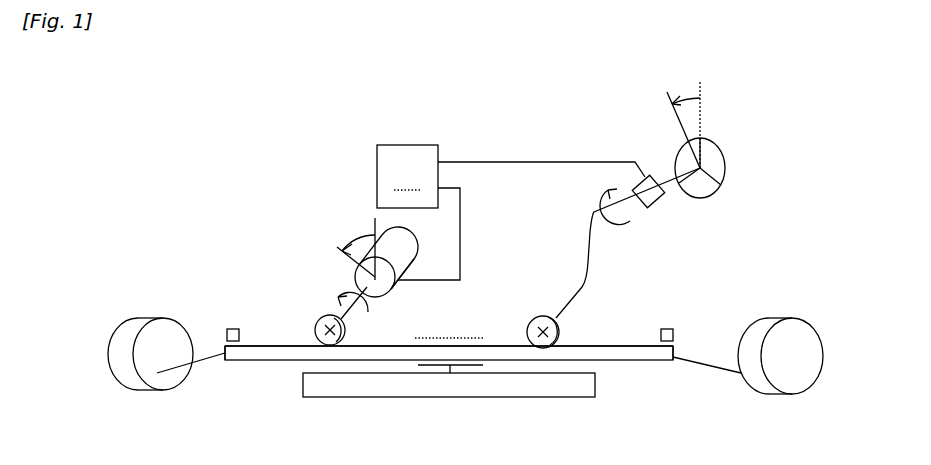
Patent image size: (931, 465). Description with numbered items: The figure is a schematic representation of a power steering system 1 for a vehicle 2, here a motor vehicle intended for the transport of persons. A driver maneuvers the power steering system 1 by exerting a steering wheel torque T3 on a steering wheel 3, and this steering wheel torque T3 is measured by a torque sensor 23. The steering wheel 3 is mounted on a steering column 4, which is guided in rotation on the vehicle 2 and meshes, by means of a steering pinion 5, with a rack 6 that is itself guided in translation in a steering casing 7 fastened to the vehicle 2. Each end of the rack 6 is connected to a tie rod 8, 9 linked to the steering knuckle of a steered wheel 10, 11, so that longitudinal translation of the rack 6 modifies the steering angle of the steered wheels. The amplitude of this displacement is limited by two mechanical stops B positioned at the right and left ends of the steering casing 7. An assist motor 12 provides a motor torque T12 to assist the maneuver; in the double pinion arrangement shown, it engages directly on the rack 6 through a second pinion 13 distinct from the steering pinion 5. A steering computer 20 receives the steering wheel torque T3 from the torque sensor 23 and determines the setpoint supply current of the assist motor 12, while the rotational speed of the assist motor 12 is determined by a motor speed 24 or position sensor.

The power steering system 1 is at (772, 213).
The vehicle 2 is at (590, 386).
The steering wheel 3 is at (725, 160).
The steering column 4 is at (589, 240).
The steering pinion 5 is at (562, 327).
The rack 6 is at (513, 346).
The steering casing 7 is at (456, 338).
The tie rod 8 is at (690, 354).
The tie rod 9 is at (224, 346).
The steered wheel 10 is at (810, 348).
The steered wheel 11 is at (120, 350).
The assist motor 12 is at (412, 239).
The second pinion 13 is at (318, 322).
The steering computer 20 is at (418, 212).
The torque sensor 23 is at (650, 176).
The motor speed sensor 24 is at (403, 277).
The mechanical stops B is at (233, 329).
The steering wheel torque T3 is at (631, 222).
The motor torque T12 is at (370, 313).